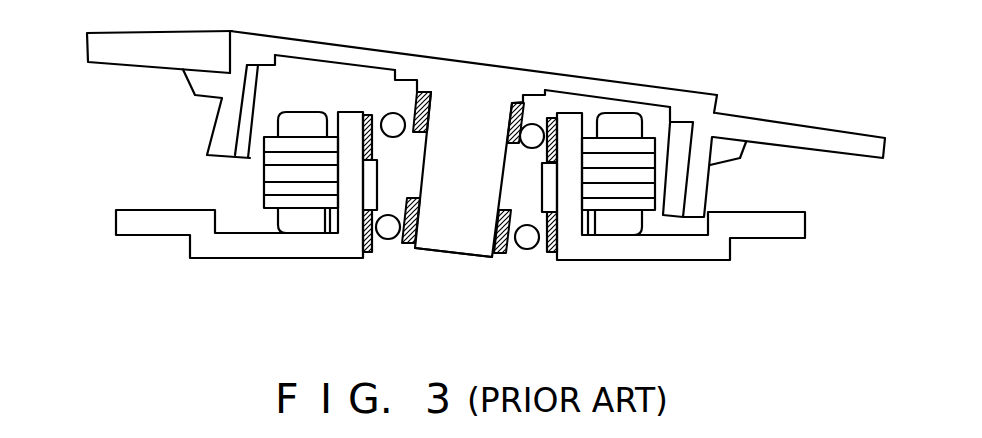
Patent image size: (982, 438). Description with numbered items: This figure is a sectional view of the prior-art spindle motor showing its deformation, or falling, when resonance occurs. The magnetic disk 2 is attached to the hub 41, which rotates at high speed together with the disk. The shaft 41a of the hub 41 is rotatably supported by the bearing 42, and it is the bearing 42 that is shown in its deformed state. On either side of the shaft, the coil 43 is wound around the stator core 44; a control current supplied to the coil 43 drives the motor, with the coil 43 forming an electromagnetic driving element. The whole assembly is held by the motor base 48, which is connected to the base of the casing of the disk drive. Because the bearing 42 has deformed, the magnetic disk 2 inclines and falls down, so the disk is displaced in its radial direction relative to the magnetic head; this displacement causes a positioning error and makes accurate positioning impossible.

The magnetic disk 2 is at (783, 135).
The hub 41 is at (502, 80).
The shaft 41a is at (443, 230).
The bearing 42 is at (398, 116).
The coil 43 is at (633, 157).
The stator core 44 is at (310, 120).
The motor base 48 is at (673, 252).